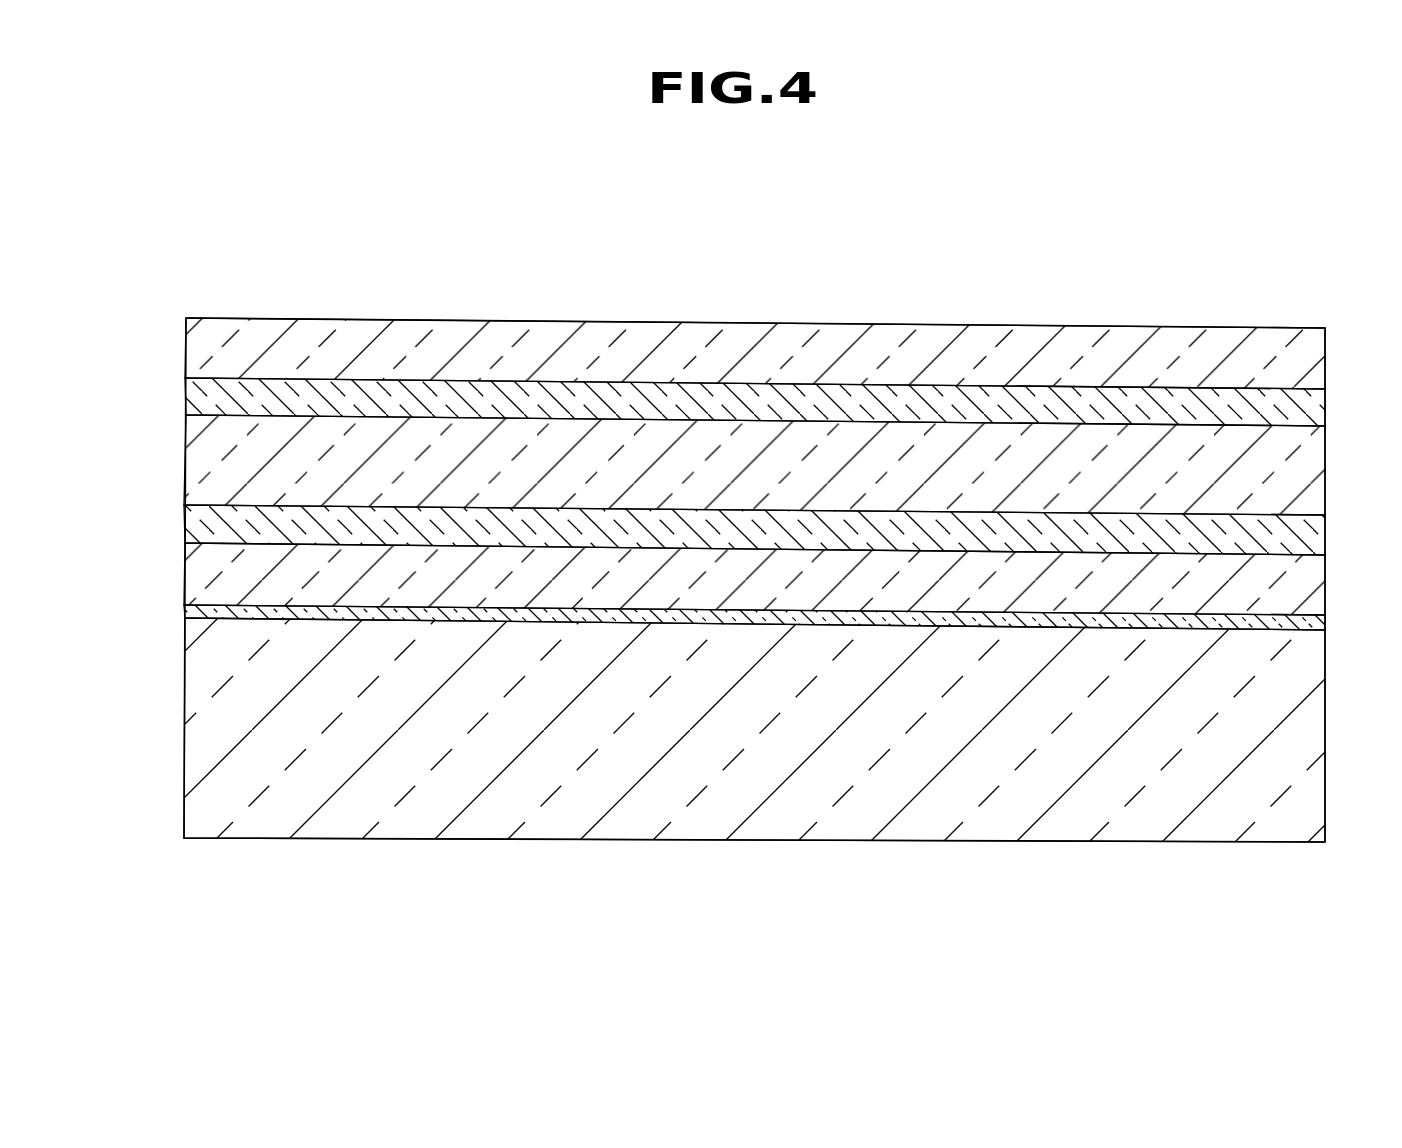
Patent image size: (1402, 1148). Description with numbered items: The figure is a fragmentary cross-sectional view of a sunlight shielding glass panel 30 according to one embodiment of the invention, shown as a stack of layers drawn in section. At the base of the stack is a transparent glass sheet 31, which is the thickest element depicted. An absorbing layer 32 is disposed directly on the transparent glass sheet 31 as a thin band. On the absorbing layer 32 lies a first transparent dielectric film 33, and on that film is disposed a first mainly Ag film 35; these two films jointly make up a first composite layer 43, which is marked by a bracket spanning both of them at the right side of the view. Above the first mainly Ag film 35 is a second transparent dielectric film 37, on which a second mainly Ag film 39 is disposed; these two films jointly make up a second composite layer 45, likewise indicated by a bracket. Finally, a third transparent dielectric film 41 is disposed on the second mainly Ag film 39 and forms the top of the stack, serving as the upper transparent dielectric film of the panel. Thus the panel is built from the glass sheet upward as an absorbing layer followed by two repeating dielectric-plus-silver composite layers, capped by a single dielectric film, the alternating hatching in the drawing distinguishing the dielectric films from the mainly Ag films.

The sunlight shielding glass panel 30 is at (1272, 275).
The transparent glass sheet 31 is at (971, 778).
The absorbing layer 32 is at (182, 611).
The first transparent dielectric film 33 is at (184, 585).
The first mainly Ag film 35 is at (183, 519).
The second transparent dielectric film 37 is at (186, 470).
The second mainly Ag film 39 is at (185, 395).
The third transparent dielectric film 41 is at (200, 340).
The first composite layer 43 is at (1333, 517).
The second composite layer 45 is at (1333, 389).